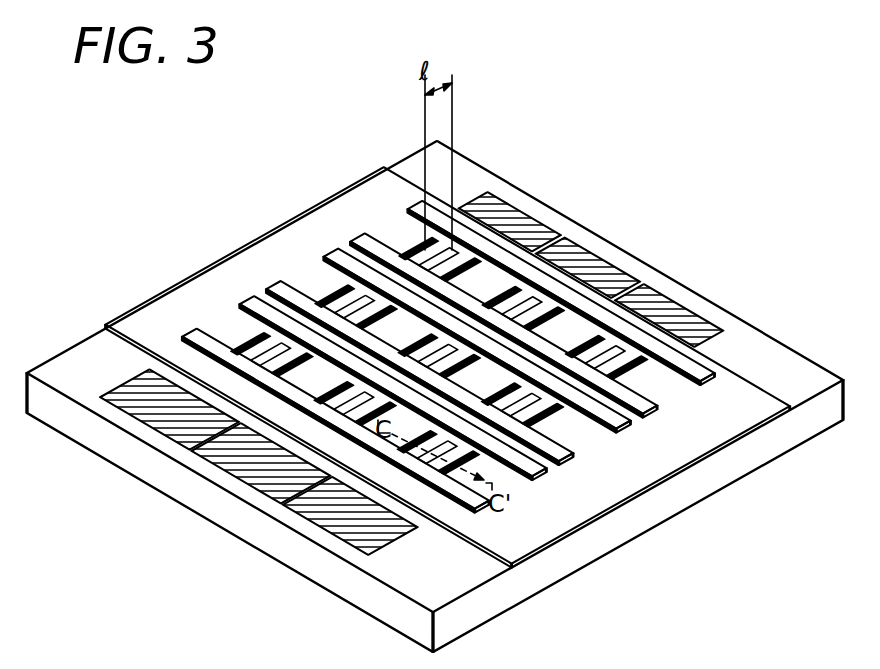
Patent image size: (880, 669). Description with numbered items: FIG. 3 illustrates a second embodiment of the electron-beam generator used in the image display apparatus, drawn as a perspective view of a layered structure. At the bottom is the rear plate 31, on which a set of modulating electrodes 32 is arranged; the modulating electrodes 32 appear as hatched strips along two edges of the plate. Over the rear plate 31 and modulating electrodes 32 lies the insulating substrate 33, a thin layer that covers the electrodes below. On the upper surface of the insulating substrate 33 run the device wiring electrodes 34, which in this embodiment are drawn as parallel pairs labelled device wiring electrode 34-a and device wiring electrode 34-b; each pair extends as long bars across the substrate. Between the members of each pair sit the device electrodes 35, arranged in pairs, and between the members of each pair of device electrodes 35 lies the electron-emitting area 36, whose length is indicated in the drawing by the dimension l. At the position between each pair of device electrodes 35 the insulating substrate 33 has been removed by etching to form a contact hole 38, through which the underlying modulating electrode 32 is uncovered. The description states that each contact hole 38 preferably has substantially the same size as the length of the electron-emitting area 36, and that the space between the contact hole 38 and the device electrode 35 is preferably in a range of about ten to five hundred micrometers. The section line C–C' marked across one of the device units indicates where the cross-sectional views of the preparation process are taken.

The rear plate 31 is at (808, 423).
The modulating electrode 32 is at (703, 318).
The insulating substrate 33 is at (722, 432).
The device wiring electrode 34 is at (448, 307).
The device wiring electrode 34-a is at (408, 208).
The device wiring electrode 34-b is at (352, 240).
The device electrode 35 is at (453, 247).
The electron-emitting area 36 is at (533, 293).
The contact hole 38 is at (597, 340).